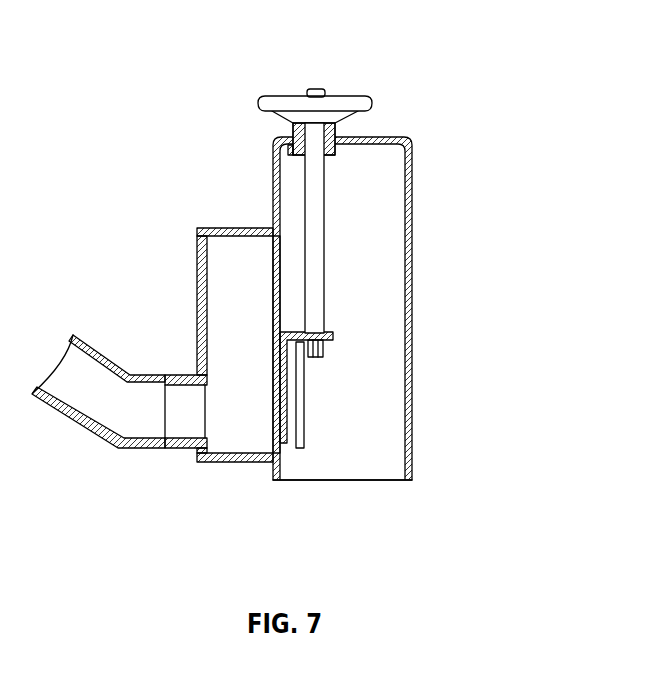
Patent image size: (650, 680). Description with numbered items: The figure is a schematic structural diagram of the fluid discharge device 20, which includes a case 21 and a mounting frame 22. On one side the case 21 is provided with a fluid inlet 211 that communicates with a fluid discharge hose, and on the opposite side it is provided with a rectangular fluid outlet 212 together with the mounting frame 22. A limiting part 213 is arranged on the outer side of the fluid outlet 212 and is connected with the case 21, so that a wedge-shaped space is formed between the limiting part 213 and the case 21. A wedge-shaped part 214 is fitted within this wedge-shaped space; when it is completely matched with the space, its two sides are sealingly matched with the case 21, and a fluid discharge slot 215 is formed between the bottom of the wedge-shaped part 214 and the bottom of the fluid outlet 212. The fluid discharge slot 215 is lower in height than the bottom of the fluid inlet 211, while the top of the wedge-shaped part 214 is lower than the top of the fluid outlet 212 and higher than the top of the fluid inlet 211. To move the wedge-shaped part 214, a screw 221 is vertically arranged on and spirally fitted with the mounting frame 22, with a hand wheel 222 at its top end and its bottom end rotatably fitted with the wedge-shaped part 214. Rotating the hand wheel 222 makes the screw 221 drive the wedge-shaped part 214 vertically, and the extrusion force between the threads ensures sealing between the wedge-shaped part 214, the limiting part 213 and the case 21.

The fluid discharge device 20 is at (307, 27).
The case 21 is at (197, 302).
The fluid inlet 211 is at (203, 410).
The fluid outlet 212 is at (268, 390).
The limiting part 213 is at (313, 381).
The wedge-shaped part 214 is at (287, 404).
The fluid discharge slot 215 is at (286, 456).
The mounting frame 22 is at (326, 341).
The screw 221 is at (327, 232).
The hand wheel 222 is at (373, 100).